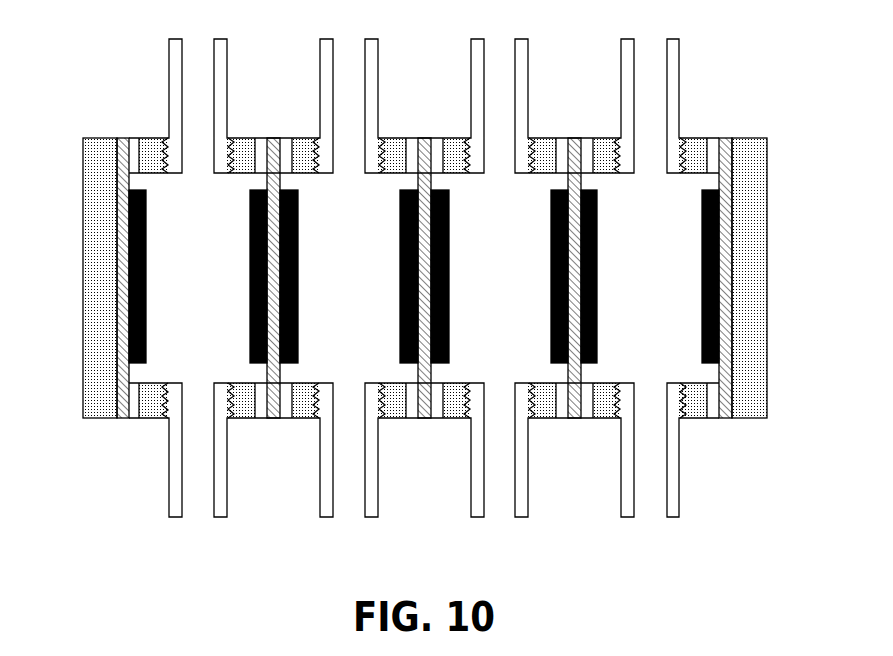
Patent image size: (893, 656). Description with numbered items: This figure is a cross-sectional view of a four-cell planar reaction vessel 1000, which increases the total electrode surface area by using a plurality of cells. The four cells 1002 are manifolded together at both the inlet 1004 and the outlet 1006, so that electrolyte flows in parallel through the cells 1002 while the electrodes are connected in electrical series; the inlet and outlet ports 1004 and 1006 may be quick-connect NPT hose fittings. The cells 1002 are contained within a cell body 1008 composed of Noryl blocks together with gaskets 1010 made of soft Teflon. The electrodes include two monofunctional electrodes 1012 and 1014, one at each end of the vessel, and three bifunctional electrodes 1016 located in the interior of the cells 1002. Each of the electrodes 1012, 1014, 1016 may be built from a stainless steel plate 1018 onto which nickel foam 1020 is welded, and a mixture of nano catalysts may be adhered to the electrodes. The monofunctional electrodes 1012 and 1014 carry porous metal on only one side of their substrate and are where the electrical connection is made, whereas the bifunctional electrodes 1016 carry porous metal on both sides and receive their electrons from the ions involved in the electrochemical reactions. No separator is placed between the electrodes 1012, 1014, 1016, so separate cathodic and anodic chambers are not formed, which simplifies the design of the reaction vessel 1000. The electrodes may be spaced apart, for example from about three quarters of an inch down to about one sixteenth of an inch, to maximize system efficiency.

The reaction vessel 1000 is at (727, 90).
The cells 1002 is at (176, 361).
The inlet 1004 is at (197, 483).
The outlet 1006 is at (200, 68).
The cell body 1008 is at (758, 367).
The gaskets 1010 is at (260, 138).
The monofunctional electrode 1012 is at (680, 262).
The monofunctional electrode 1014 is at (164, 262).
The bifunctional electrodes 1016 is at (318, 317).
The stainless steel 316 plate 1018 is at (274, 418).
The nickel foam 1020 is at (146, 242).